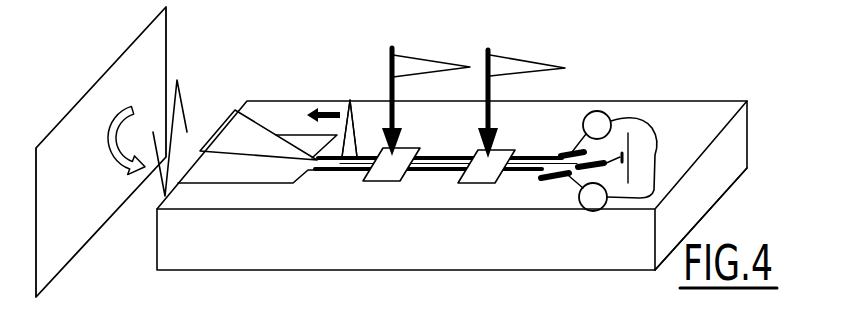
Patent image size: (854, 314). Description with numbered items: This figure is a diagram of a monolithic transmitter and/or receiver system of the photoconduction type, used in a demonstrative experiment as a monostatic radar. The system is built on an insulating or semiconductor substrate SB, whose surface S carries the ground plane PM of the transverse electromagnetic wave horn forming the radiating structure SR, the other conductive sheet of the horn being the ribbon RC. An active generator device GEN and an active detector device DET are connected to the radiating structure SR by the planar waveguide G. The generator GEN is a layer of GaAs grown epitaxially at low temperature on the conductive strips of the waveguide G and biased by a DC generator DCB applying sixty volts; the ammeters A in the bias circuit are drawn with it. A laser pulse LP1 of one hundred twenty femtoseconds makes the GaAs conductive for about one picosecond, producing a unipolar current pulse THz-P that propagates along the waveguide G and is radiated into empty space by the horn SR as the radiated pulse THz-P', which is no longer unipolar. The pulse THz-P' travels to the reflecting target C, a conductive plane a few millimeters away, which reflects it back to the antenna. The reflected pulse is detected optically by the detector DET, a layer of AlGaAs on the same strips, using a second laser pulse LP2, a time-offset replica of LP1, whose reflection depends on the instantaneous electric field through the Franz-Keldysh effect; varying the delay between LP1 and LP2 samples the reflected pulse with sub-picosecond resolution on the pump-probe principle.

The reflecting target C is at (118, 59).
The radiated pulse THz-P' is at (196, 104).
The ribbon RC is at (221, 113).
The radiating structure SR is at (272, 122).
The electric current pulse THz-P is at (330, 102).
The planar waveguide G is at (364, 138).
The ground plane PM is at (221, 172).
The generator device GEN is at (379, 178).
The detector DET is at (482, 180).
The laser pulse LP1 is at (438, 59).
The laser pulse LP2 is at (523, 59).
The DC generator DCB is at (654, 116).
The ammeter A is at (595, 161).
The surface S is at (716, 108).
The substrate SB is at (728, 168).